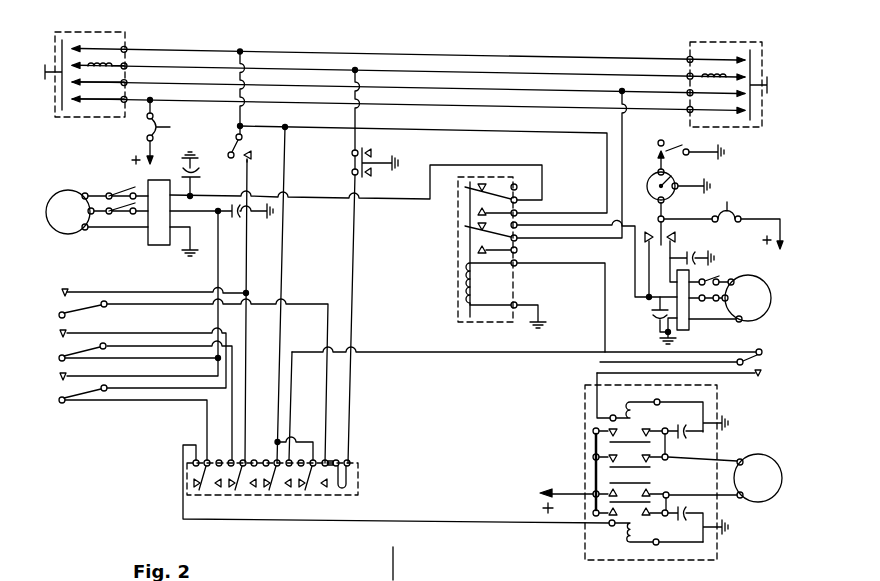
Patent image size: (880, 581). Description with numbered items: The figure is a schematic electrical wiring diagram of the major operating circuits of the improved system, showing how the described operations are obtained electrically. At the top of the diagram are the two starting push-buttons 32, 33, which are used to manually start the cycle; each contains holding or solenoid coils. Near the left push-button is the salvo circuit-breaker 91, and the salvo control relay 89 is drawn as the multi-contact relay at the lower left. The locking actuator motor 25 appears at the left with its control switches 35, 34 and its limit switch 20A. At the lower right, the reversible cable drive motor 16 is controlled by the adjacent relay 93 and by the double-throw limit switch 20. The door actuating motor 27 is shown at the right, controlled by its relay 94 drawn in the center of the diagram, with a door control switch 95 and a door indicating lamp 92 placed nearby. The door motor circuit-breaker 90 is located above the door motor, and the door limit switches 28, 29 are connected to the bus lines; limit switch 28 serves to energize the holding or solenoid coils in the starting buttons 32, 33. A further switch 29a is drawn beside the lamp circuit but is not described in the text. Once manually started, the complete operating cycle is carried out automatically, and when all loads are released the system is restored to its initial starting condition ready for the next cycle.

The starting push-button 32 is at (120, 32).
The starting push-button 33 is at (697, 42).
The salvo circuit-breaker 91 is at (146, 126).
The door limit switch 29 is at (249, 151).
The door limit switch 28 is at (381, 161).
The door motor relay 94 is at (458, 239).
The switch 29a is at (670, 148).
The door indicating lamp 92 is at (668, 178).
The door motor circuit-breaker 90 is at (738, 216).
The door control switch 95 is at (678, 237).
The door actuating motor 27 is at (724, 300).
The locking actuator motor 25 is at (108, 212).
The control switch 35 is at (60, 302).
The control switch 34 is at (60, 344).
The limit switch 20A is at (60, 392).
The double-throw limit switch 20 is at (764, 361).
The salvo control relay 89 is at (278, 496).
The relay 93 is at (584, 455).
The reversible cable drive motor 16 is at (758, 478).